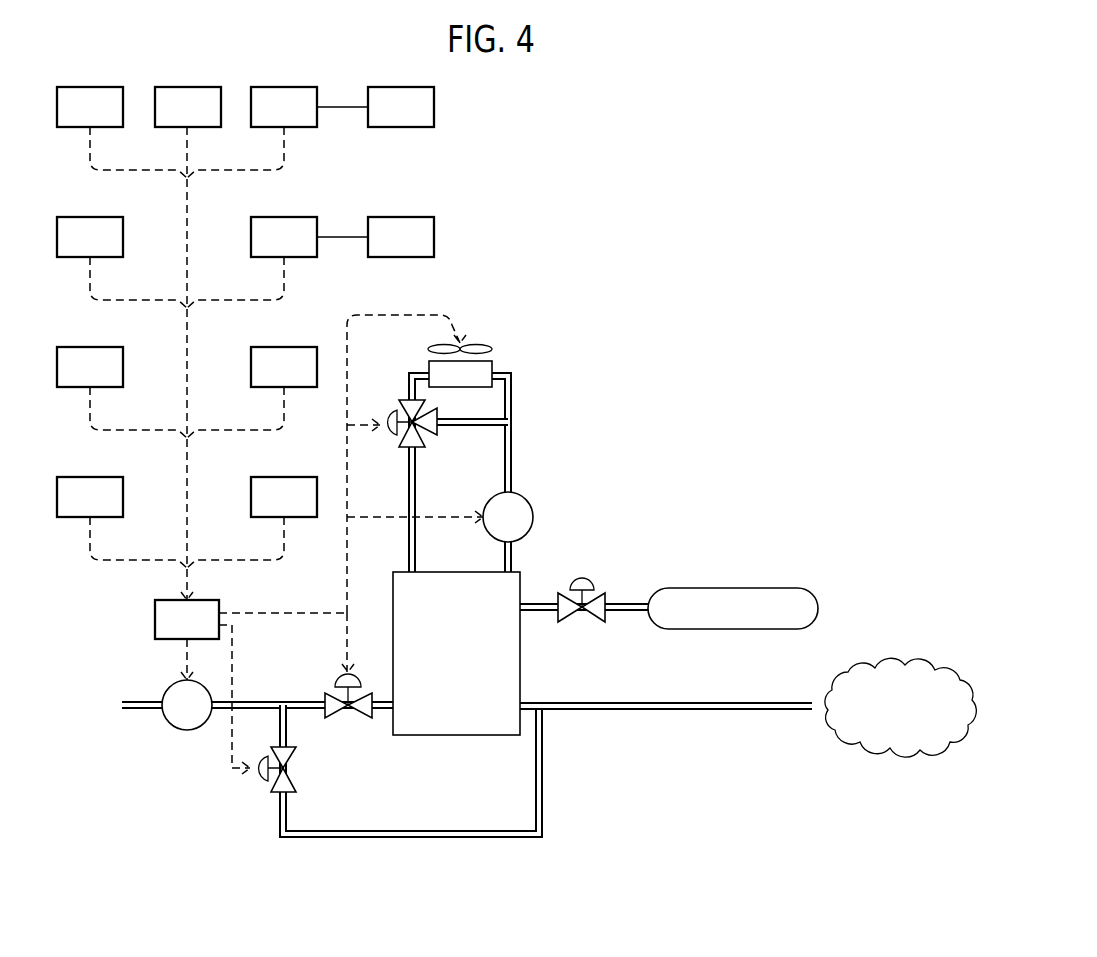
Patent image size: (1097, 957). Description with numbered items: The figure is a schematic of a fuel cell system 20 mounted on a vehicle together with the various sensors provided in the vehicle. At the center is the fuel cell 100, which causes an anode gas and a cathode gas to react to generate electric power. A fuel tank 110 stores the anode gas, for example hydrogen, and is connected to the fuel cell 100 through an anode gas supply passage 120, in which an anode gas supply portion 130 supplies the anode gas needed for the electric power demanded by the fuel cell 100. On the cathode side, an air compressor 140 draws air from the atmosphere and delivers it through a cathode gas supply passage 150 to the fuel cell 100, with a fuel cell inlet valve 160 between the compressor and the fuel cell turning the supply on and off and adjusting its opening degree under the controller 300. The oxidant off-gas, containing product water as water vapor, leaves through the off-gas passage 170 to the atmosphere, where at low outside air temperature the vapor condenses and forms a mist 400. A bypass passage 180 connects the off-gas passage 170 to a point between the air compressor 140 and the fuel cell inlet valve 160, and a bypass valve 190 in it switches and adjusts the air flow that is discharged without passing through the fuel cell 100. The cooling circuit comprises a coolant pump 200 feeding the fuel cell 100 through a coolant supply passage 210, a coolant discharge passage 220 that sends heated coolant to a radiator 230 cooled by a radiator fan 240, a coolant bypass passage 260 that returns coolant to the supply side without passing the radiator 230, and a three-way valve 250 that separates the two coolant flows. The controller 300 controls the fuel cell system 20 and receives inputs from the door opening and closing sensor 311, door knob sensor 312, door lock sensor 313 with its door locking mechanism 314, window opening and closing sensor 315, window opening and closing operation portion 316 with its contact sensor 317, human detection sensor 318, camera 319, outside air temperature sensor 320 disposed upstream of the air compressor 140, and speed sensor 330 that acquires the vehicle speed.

The fuel cell system 20 is at (725, 279).
The fuel cell 100 is at (520, 660).
The fuel tank 110 is at (770, 588).
The anode gas supply passage 120 is at (628, 602).
The anode gas supply portion 130 is at (606, 590).
The air compressor 140 is at (168, 685).
The cathode gas supply passage 150 is at (247, 702).
The fuel cell inlet valve 160 is at (324, 693).
The off-gas passage 170 is at (648, 703).
The bypass passage 180 is at (396, 830).
The bypass valve 190 is at (280, 803).
The coolant pump 200 is at (518, 493).
The coolant supply passage 210 is at (512, 556).
The coolant discharge passage 220 is at (409, 556).
The radiator 230 is at (493, 361).
The radiator fan 240 is at (487, 343).
The three-way valve 250 is at (407, 398).
The coolant bypass passage 260 is at (478, 417).
The controller 300 is at (155, 619).
The door opening and closing sensor 311 is at (71, 120).
The door knob sensor 312 is at (169, 120).
The door lock sensor 313 is at (265, 120).
The door locking mechanism 314 is at (382, 120).
The window opening and closing sensor 315 is at (71, 250).
The window opening and closing operation portion 316 is at (265, 250).
The window opening and closing operation portion contact sensor 317 is at (382, 250).
The human detection sensor 318 is at (71, 380).
The camera 319 is at (265, 380).
The outside air temperature sensor 320 is at (71, 510).
The speed sensor 330 is at (265, 510).
The mist 400 is at (905, 665).